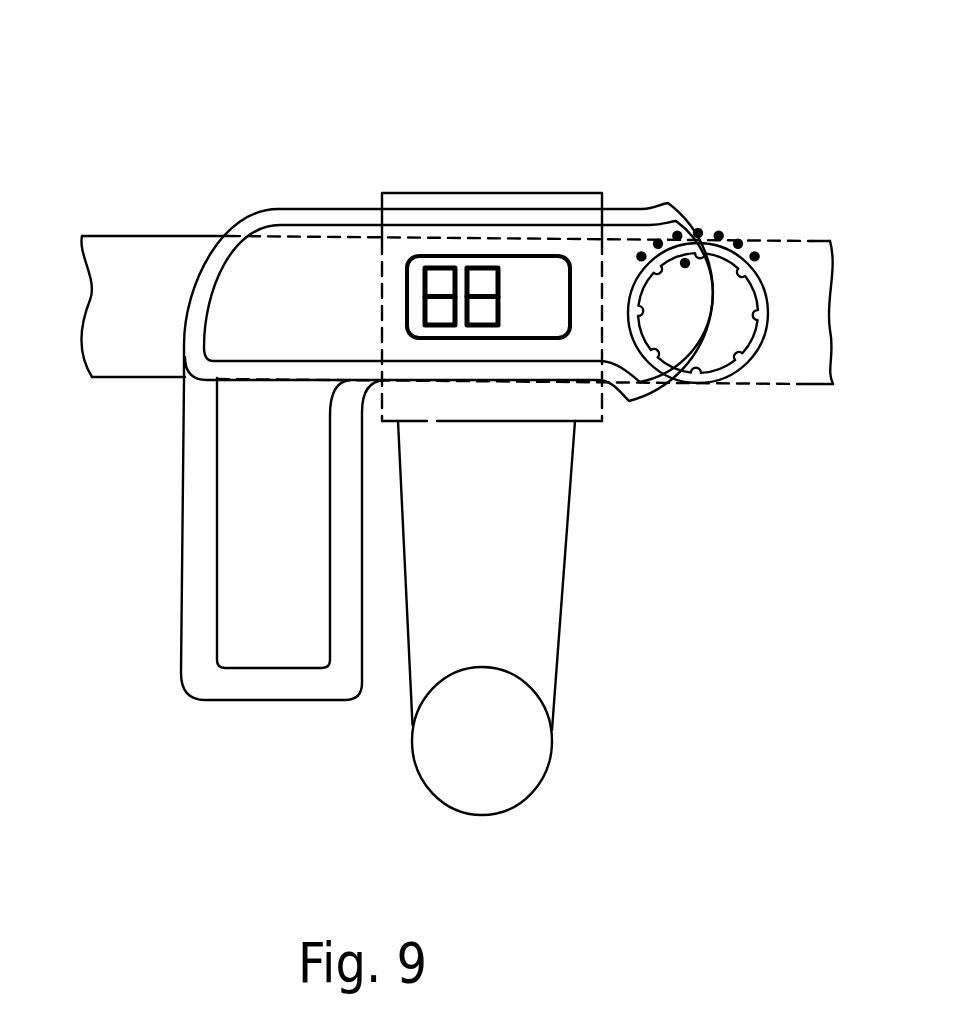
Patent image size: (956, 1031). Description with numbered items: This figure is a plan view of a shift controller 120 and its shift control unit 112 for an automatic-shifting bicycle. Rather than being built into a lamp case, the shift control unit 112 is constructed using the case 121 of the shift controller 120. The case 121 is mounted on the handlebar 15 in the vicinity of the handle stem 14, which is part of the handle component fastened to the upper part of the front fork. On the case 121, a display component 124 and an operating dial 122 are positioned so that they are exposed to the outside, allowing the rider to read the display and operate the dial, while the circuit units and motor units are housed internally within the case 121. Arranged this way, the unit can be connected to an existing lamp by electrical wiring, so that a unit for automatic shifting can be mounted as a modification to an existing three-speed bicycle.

The handle stem 14 is at (520, 738).
The handlebar 15 is at (120, 353).
The shift control unit 112 is at (305, 253).
The shift controller 120 is at (288, 183).
The case 121 is at (235, 557).
The operating dial 122 is at (705, 338).
The display component 124 is at (528, 275).